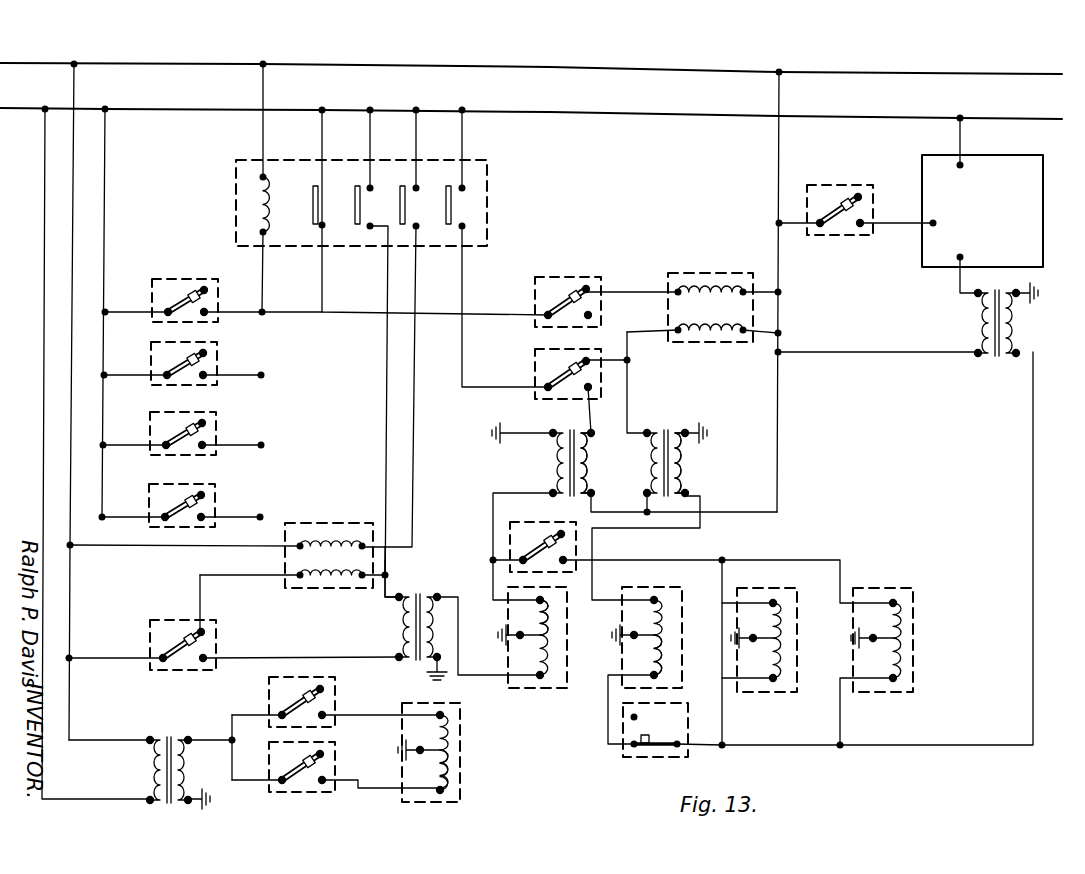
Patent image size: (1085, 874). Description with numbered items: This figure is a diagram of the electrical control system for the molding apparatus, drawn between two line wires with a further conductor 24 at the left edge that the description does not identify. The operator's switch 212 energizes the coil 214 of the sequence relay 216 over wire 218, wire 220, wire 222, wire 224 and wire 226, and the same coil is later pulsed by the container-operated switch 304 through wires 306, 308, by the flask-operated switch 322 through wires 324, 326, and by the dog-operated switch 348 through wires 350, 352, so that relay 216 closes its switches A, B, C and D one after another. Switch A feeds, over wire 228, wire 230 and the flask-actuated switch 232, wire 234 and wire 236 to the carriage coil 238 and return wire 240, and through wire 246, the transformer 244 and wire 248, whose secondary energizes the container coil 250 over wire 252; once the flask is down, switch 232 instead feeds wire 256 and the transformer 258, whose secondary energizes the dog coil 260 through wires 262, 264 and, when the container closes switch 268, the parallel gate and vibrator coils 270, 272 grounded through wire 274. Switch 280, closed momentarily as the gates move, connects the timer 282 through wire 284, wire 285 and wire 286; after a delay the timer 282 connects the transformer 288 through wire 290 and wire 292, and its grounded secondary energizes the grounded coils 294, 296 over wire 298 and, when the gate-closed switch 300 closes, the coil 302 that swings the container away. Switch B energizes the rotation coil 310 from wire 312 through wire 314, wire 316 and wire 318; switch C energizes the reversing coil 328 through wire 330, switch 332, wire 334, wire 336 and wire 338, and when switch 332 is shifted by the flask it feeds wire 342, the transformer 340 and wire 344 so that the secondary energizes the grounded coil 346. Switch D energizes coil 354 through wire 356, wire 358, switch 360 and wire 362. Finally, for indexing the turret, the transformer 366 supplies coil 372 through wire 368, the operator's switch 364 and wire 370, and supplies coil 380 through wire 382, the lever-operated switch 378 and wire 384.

The conductor 24 is at (44, 352).
The switch 212 is at (205, 288).
The coil 214 is at (262, 196).
The sequence relay 216 is at (491, 180).
The wire 218 is at (106, 153).
The wire 220 is at (127, 311).
The wire 222 is at (235, 311).
The wire 224 is at (264, 267).
The wire 226 is at (262, 130).
The wire 228 is at (461, 150).
The wire 230 is at (463, 273).
The switch 232 is at (555, 382).
The wire 234 is at (605, 348).
The wire 236 is at (650, 334).
The coil 238 is at (745, 331).
The wire 240 is at (778, 163).
The transformer 244 is at (666, 431).
The wire 246 is at (629, 397).
The wire 248 is at (648, 507).
The coil 250 is at (668, 585).
The wire 252 is at (647, 529).
The wire 256 is at (596, 448).
The transformer 258 is at (574, 434).
The coil 260 is at (553, 608).
The wire 262 is at (492, 511).
The wire 264 is at (494, 566).
The switch 268 is at (558, 527).
The coil 270 is at (775, 602).
The coil 272 is at (910, 587).
The wire 274 is at (780, 554).
The switch 280 is at (835, 192).
The time delay mechanism 282 is at (1036, 156).
The wire 284 is at (793, 226).
The wire 285 is at (890, 226).
The wire 286 is at (959, 147).
The transformer 288 is at (997, 357).
The wire 290 is at (902, 347).
The wire 292 is at (959, 281).
The coil 294 is at (793, 679).
The coil 296 is at (906, 645).
The wire 298 is at (898, 744).
The switch 300 is at (634, 748).
The coil 302 is at (655, 668).
The switch 304 is at (191, 353).
The wire 306 is at (125, 374).
The wire 308 is at (248, 374).
The coil 310 is at (305, 533).
The wire 312 is at (72, 200).
The wire 314 is at (138, 547).
The wire 316 is at (328, 545).
The wire 318 is at (415, 148).
The switch 322 is at (191, 421).
The wire 324 is at (122, 444).
The wire 326 is at (244, 444).
The coil 328 is at (298, 574).
The wire 330 is at (112, 657).
The switch 332 is at (195, 628).
The wire 334 is at (201, 605).
The wire 336 is at (383, 586).
The wire 338 is at (369, 148).
The transformer 340 is at (406, 597).
The wire 342 is at (300, 649).
The wire 344 is at (387, 580).
The coil 346 is at (562, 680).
The switch 348 is at (183, 496).
The wire 350 is at (118, 516).
The wire 352 is at (245, 516).
The coil 354 is at (716, 290).
The wire 356 is at (321, 147).
The wire 358 is at (321, 304).
The switch 360 is at (568, 281).
The wire 362 is at (625, 291).
The switch 364 is at (278, 708).
The transformer 366 is at (165, 738).
The wire 368 is at (210, 738).
The wire 370 is at (366, 714).
The coil 372 is at (462, 727).
The switch 378 is at (300, 758).
The coil 380 is at (462, 770).
The wire 382 is at (240, 790).
The wire 384 is at (388, 790).